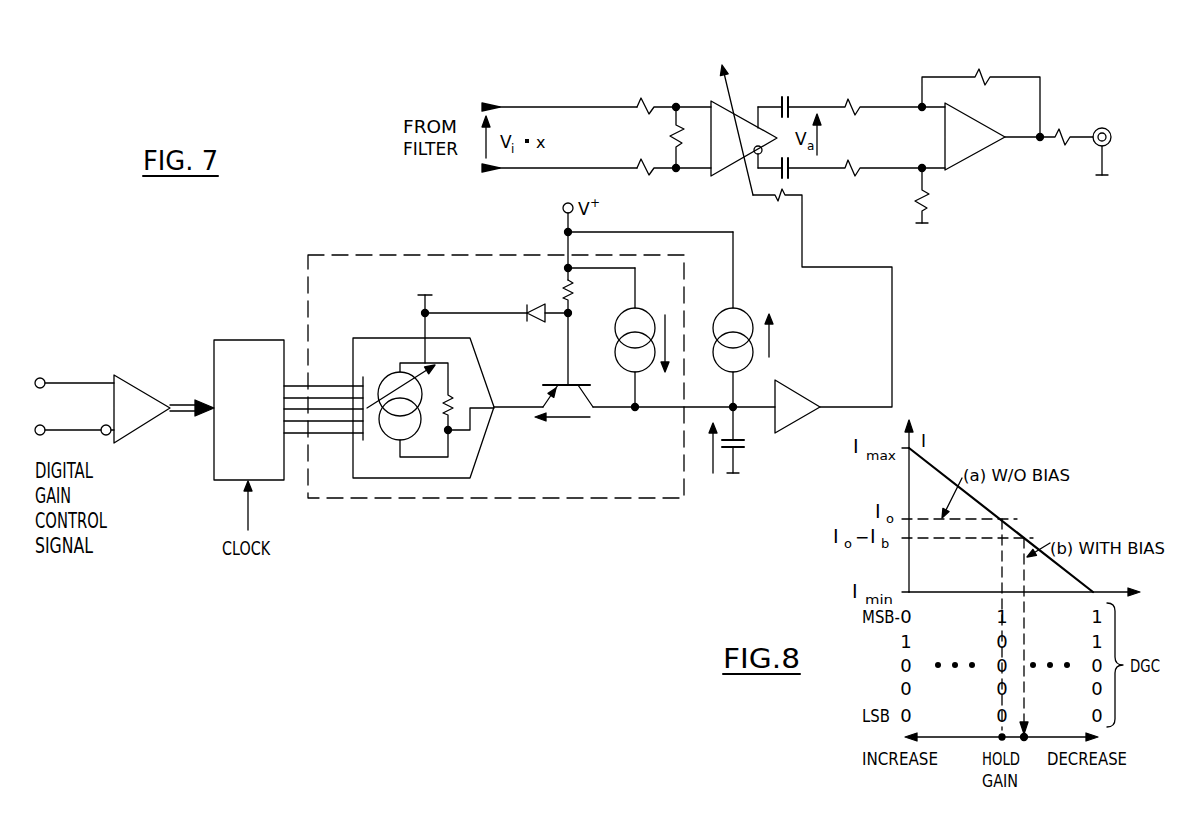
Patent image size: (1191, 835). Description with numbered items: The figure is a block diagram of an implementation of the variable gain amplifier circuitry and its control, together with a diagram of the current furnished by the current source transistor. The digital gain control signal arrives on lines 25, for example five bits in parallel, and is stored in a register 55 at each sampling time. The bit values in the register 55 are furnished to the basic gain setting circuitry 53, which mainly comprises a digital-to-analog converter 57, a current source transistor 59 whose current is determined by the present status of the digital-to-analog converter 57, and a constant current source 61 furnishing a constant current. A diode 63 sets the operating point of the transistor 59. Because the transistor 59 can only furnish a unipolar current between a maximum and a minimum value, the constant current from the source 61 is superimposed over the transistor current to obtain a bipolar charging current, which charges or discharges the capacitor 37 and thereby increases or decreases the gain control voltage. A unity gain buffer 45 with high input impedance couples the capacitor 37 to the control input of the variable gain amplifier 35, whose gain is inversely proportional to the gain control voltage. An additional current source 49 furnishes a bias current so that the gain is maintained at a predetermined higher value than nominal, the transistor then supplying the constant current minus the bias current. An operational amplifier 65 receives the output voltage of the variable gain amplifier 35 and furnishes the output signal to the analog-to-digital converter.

The lines 25 is at (73, 370).
The variable gain amplifier 35 is at (734, 178).
The capacitor 37 is at (746, 425).
The buffer 45 is at (803, 427).
The current source 49 is at (742, 309).
The gain setting circuitry 53 is at (492, 499).
The register 55 is at (244, 338).
The digital-to-analog converter 57 is at (481, 459).
The current source transistor 59 is at (556, 384).
The constant current source 61 is at (633, 305).
The diode 63 is at (538, 307).
The operational amplifier 65 is at (979, 149).